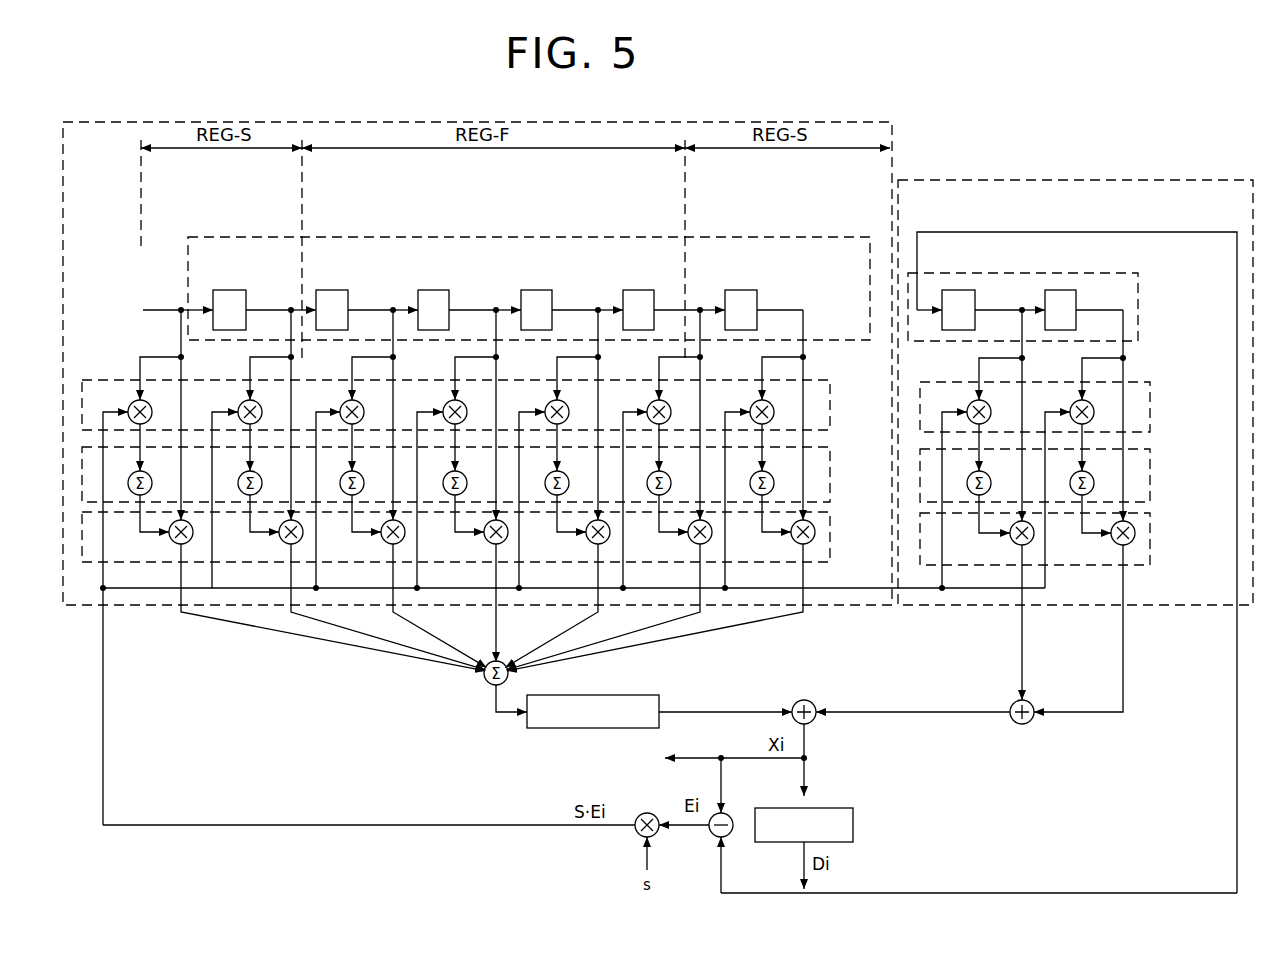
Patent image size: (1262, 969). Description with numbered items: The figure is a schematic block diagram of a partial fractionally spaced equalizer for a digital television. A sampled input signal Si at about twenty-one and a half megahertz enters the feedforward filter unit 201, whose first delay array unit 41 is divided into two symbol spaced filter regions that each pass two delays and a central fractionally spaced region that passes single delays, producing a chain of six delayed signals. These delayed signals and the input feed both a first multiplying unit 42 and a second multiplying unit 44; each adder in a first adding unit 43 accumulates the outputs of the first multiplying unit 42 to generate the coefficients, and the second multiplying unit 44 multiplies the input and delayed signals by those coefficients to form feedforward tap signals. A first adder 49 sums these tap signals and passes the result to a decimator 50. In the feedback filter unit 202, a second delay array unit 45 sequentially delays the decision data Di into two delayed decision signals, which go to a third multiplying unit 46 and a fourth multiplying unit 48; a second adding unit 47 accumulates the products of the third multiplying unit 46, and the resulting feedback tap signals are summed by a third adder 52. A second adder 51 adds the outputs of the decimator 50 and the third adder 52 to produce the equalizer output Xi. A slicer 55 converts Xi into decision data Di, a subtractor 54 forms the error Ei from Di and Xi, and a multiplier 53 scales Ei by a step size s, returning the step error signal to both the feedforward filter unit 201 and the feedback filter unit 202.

The feedforward filter unit 201 is at (892, 148).
The feedback filter unit 202 is at (1020, 180).
The first delay array unit 41 is at (830, 237).
The first multiplying unit 42 is at (830, 405).
The first adding unit 43 is at (830, 472).
The second multiplying unit 44 is at (830, 537).
The second delay array unit 45 is at (1138, 306).
The third multiplying unit 46 is at (1150, 407).
The second adding unit 47 is at (1150, 475).
The fourth multiplying unit 48 is at (1150, 540).
The first adder 49 is at (485, 681).
The decimator 50 is at (557, 728).
The second adder 51 is at (813, 700).
The third adder 52 is at (1030, 724).
The multiplier 53 is at (636, 833).
The subtractor 54 is at (712, 837).
The slicer 55 is at (853, 825).